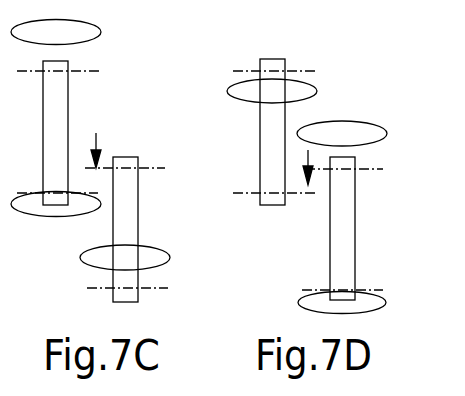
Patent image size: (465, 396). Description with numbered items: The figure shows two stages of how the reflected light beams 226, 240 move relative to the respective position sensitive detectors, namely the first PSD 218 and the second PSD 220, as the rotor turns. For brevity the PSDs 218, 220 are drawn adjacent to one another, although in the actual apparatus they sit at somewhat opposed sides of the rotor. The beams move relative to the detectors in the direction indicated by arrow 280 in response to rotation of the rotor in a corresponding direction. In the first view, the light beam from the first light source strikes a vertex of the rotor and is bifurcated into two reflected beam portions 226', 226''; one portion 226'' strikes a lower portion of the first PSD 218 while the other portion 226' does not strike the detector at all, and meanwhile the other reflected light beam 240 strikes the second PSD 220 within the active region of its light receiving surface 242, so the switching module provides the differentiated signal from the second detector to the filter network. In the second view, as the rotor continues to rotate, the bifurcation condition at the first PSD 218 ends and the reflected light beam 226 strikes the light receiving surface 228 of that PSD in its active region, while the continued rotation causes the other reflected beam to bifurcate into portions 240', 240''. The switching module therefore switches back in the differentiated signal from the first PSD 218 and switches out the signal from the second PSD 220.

In FIG. 7C, the first PSD 218 is at (68, 88).
In FIG. 7D, the first PSD 218 is at (260, 120).
In FIG. 7C, the second PSD 220 is at (138, 203).
In FIG. 7D, the second PSD 220 is at (355, 194).
In FIG. 7D, the reflected light beam 226 is at (295, 65).
In FIG. 7C, the first reflected light beam portion 226' is at (86, 26).
In FIG. 7C, the second reflected light beam portion 226'' is at (56, 228).
In FIG. 7C, the light receiving surface 228 is at (57, 107).
In FIG. 7D, the light receiving surface 228 is at (273, 146).
In FIG. 7C, the reflected light beam 240 is at (151, 267).
In FIG. 7D, the first reflected beam portion 240' is at (358, 117).
In FIG. 7D, the second reflected beam portion 240'' is at (364, 319).
In FIG. 7C, the light receiving surface 242 is at (125, 223).
In FIG. 7D, the light receiving surface 242 is at (337, 230).
In FIG. 7C, the arrow 280 is at (100, 142).
In FIG. 7D, the arrow 280 is at (305, 152).